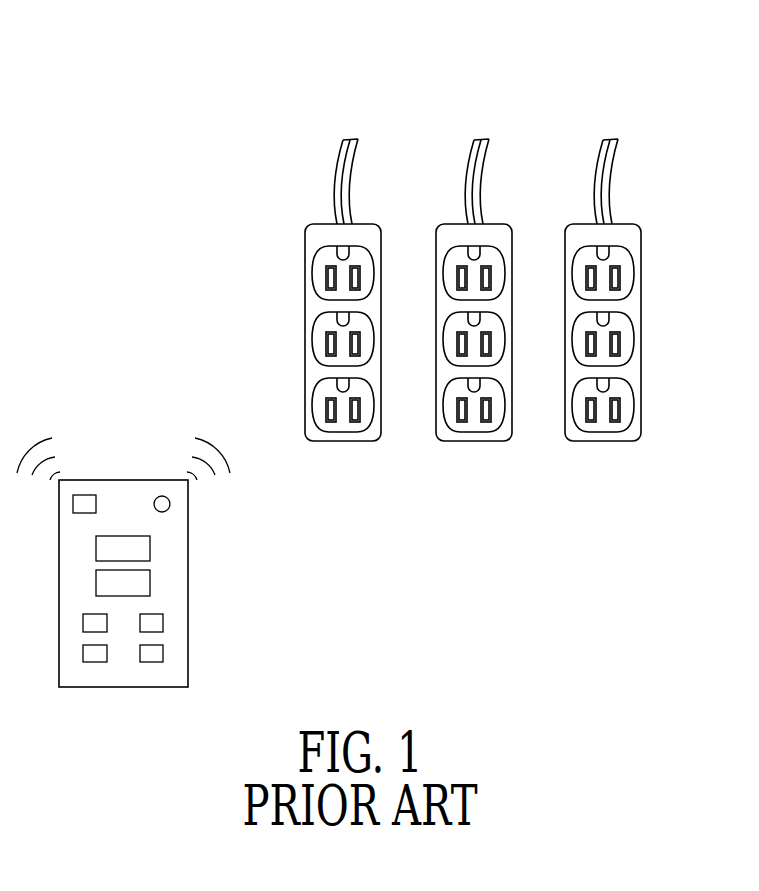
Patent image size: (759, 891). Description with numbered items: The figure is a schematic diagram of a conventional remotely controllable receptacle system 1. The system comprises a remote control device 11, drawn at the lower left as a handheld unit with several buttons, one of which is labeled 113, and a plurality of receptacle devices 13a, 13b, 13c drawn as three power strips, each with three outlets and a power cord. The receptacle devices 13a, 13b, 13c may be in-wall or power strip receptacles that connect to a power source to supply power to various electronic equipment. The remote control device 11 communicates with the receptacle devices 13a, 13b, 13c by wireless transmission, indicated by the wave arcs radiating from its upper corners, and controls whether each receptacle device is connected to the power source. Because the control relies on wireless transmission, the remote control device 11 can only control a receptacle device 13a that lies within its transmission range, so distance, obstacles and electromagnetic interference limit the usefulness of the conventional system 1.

The remotely controllable receptacle system 1 is at (97, 55).
The remote control device 11 is at (178, 596).
The control button 113 is at (163, 621).
The receptacle device 13a is at (318, 233).
The receptacle device 13b is at (450, 233).
The receptacle device 13c is at (580, 233).